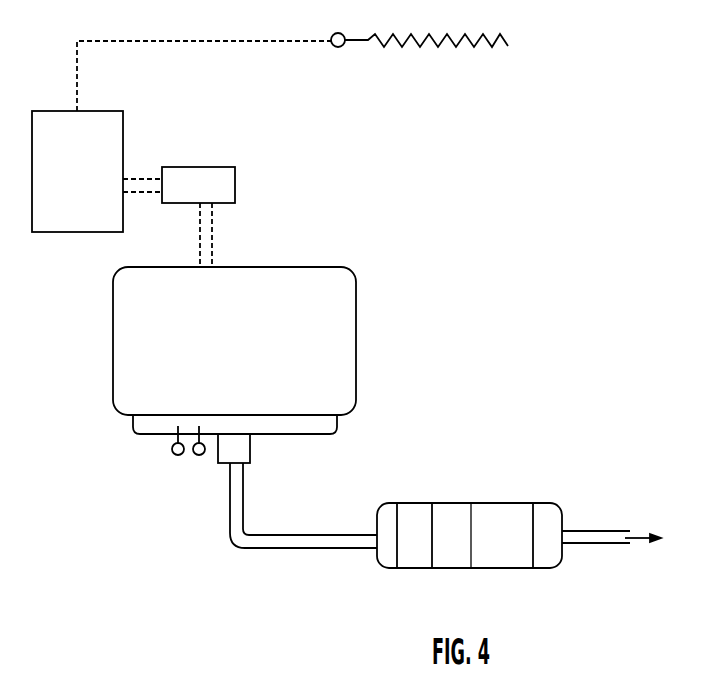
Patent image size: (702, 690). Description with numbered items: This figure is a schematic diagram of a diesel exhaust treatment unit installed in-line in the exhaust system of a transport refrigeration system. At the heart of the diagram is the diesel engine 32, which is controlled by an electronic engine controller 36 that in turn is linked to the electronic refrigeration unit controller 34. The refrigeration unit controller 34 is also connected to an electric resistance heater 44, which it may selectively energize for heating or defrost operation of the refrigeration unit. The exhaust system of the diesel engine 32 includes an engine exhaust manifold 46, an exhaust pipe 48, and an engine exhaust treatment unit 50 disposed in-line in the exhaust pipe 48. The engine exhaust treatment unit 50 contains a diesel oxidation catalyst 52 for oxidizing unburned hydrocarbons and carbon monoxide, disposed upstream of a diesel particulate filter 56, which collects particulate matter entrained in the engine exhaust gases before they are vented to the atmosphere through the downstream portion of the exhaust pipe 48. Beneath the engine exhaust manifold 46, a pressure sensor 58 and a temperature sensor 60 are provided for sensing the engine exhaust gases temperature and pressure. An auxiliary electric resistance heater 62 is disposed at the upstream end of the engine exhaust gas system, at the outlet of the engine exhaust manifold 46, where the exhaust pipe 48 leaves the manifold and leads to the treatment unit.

The diesel engine 32 is at (250, 267).
The electronic refrigeration unit controller 34 is at (123, 127).
The electronic engine controller 36 is at (220, 167).
The electric resistance heater 44 is at (337, 47).
The engine exhaust manifold 46 is at (302, 434).
The exhaust pipe 48 is at (283, 535).
The engine exhaust treatment unit 50 is at (462, 484).
The diesel oxidation catalyst 52 is at (413, 568).
The diesel particulate filter 56 is at (500, 568).
The pressure sensor 58 is at (172, 449).
The temperature sensor 60 is at (199, 455).
The auxiliary electric resistance heater 62 is at (250, 451).